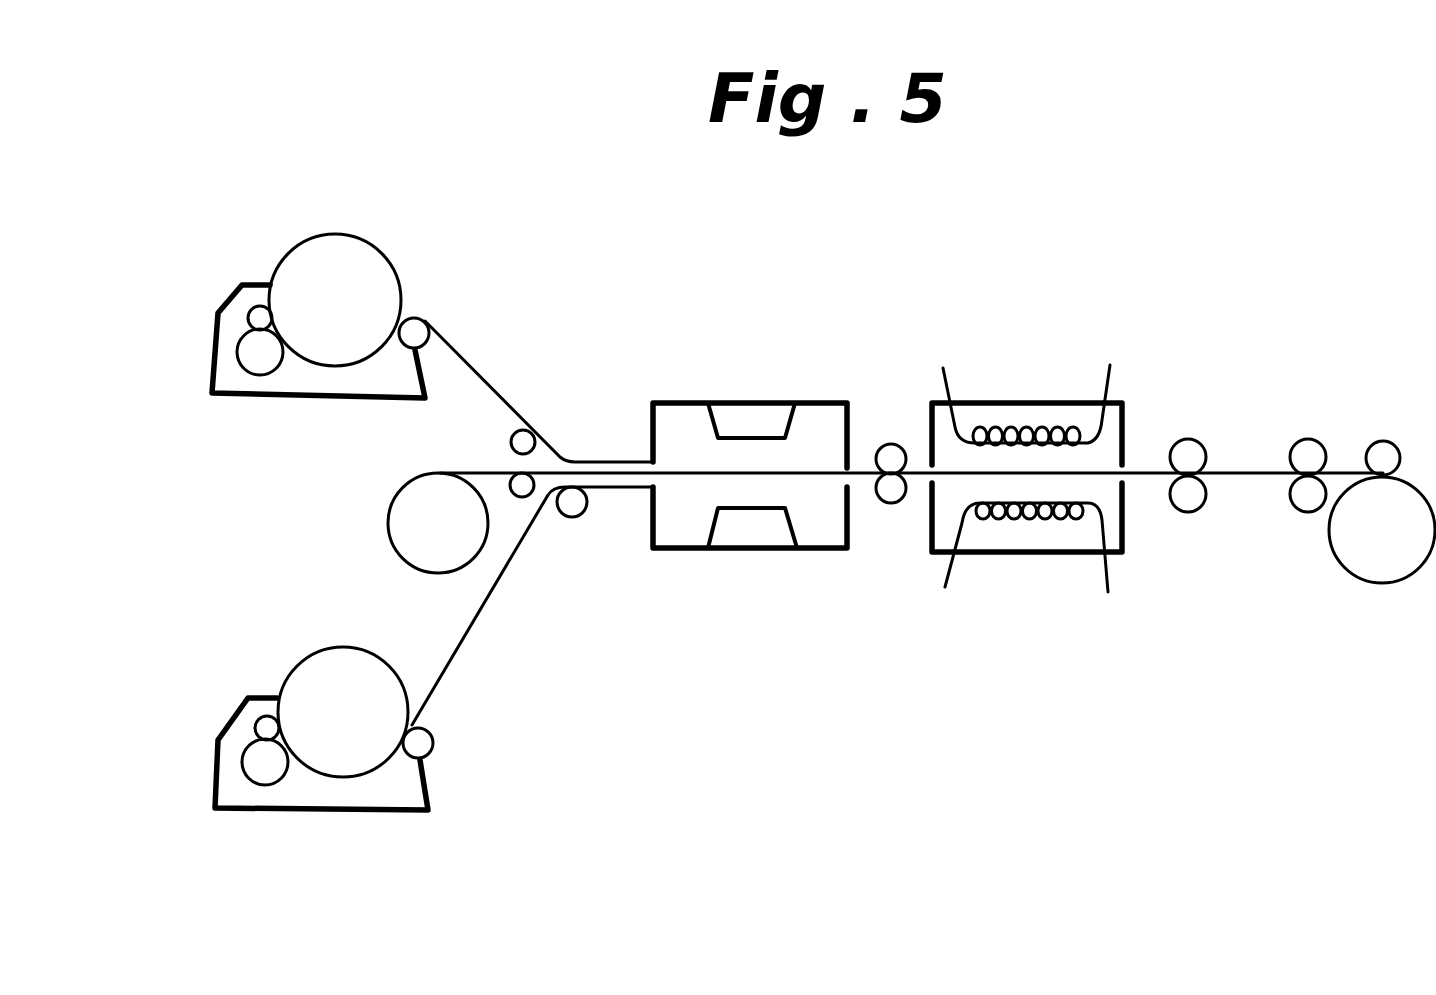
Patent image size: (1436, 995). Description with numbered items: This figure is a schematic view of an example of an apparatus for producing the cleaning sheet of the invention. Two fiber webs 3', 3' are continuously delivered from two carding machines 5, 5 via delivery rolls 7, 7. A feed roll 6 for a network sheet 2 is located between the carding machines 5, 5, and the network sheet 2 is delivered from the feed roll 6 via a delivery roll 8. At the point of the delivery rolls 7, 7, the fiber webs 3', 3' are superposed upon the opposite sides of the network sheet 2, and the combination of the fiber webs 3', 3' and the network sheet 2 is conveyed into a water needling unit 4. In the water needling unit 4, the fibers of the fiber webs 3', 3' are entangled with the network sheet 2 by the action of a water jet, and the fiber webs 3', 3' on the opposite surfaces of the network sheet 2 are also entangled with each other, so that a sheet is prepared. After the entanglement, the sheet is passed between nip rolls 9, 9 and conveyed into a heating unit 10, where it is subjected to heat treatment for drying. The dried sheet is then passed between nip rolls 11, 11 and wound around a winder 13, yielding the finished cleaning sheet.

The network sheet 2 is at (477, 472).
The fiber web 3' is at (532, 503).
The water needling unit 4 is at (742, 415).
The carding machine 5 is at (245, 293).
The feed roll 6 is at (400, 530).
The delivery roll 7 is at (523, 442).
The delivery roll 8 is at (522, 490).
The nip rolls 9 is at (893, 500).
The heating unit 10 is at (1003, 410).
The nip rolls 11 is at (1185, 453).
The winder 13 is at (1362, 558).